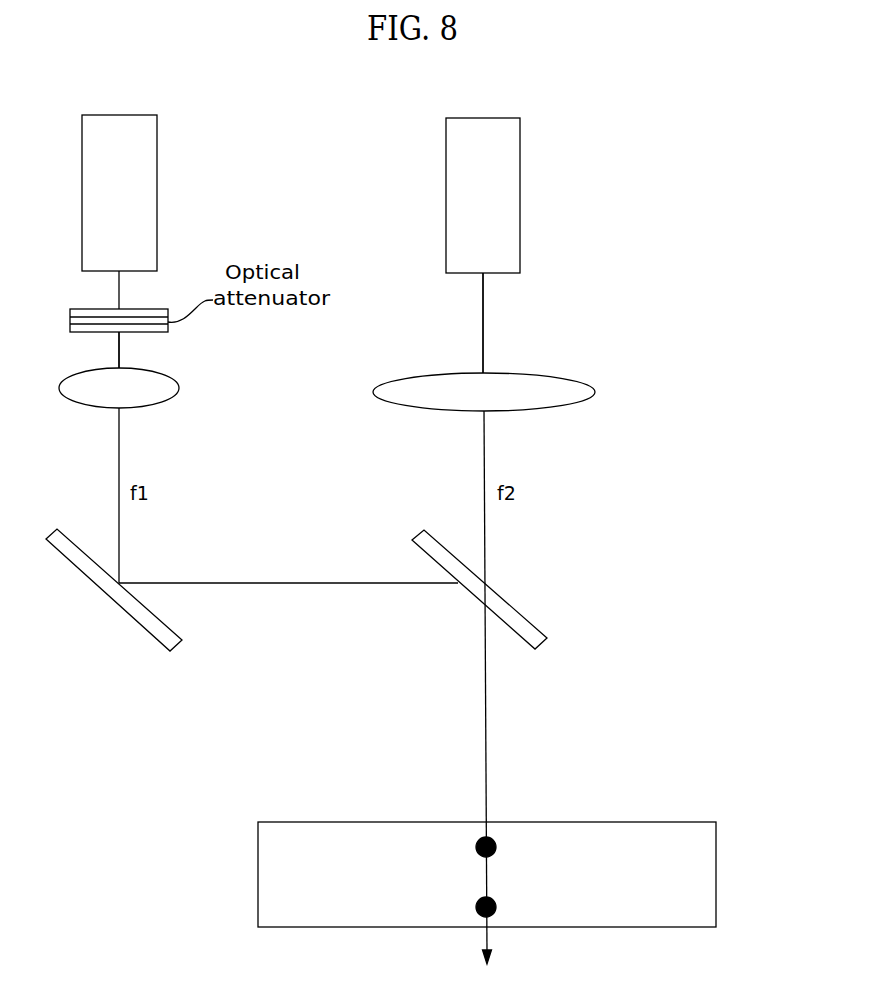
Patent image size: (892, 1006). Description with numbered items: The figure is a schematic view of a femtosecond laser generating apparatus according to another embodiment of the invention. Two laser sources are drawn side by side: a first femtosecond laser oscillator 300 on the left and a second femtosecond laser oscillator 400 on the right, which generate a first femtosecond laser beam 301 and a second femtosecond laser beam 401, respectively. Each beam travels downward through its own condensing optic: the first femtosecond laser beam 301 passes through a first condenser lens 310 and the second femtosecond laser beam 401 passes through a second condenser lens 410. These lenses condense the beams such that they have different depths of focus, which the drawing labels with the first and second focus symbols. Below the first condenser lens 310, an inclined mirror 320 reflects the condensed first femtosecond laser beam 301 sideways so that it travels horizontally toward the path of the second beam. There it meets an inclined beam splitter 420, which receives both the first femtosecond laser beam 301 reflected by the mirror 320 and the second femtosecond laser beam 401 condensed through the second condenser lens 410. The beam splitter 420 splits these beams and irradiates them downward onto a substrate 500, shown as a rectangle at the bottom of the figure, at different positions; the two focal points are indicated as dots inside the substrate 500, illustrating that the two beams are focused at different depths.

The first femtosecond laser oscillator 300 is at (142, 191).
The first femtosecond laser beam 301 is at (121, 347).
The first condenser lens 310 is at (152, 390).
The mirror 320 is at (85, 565).
The second femtosecond laser oscillator 400 is at (483, 195).
The second femtosecond laser beam 401 is at (485, 352).
The second condenser lens 410 is at (558, 393).
The beam splitter 420 is at (507, 613).
The substrate 500 is at (678, 873).